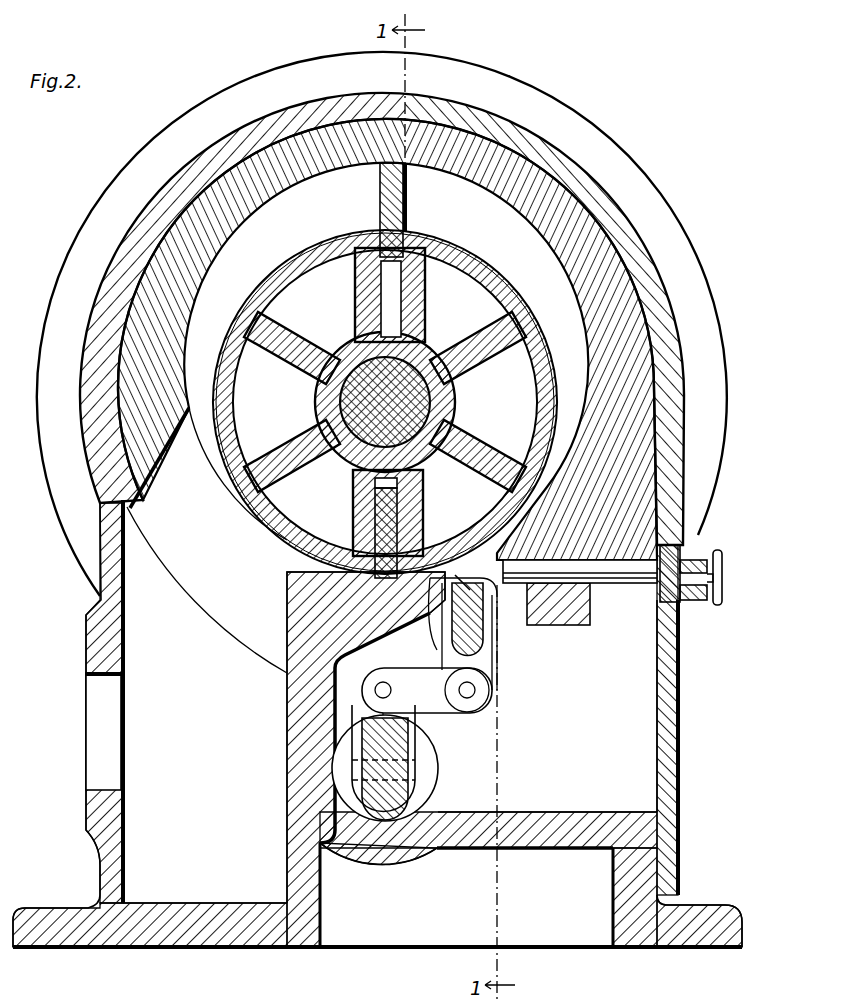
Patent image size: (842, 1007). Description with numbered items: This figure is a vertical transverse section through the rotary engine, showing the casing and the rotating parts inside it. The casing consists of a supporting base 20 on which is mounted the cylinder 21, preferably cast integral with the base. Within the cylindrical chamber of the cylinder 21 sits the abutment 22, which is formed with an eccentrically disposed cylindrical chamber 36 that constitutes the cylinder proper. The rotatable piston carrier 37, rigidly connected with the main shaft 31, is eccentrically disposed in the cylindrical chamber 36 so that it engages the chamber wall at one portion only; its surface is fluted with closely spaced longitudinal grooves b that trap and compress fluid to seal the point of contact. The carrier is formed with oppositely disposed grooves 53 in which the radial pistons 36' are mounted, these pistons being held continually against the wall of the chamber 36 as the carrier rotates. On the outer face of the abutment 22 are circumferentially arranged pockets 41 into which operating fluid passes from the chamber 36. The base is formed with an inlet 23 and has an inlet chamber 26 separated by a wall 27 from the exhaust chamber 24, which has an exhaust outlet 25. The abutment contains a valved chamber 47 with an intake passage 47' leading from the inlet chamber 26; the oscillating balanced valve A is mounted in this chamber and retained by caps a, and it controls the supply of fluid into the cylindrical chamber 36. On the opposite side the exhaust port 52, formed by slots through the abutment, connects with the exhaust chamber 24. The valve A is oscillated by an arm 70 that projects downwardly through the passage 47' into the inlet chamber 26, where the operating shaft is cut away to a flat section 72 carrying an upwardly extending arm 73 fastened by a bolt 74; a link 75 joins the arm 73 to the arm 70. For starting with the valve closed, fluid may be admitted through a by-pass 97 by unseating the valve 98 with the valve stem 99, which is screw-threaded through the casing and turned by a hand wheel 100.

The supporting base 20 is at (250, 947).
The cylinder 21 is at (123, 253).
The abutment 22 is at (584, 240).
The inlet 23 is at (665, 640).
The exhaust chamber 24 is at (205, 825).
The exhaust outlet 25 is at (95, 717).
The inlet chamber 26 is at (527, 751).
The wall 27 is at (292, 717).
The main shaft 31 is at (405, 410).
The cylindrical chamber 36 is at (387, 339).
The radial pistons 36' is at (393, 370).
The rotatable piston carrier 37 is at (468, 258).
The pockets 41 is at (473, 582).
The valved chamber 47 is at (565, 682).
The intake passage 47' is at (547, 698).
The exhaust port 52 is at (207, 540).
The grooves 53 is at (380, 297).
The arm 70 is at (480, 702).
The flat section 72 is at (392, 793).
The arm 73 is at (410, 718).
The bolt 74 is at (410, 770).
The link 75 is at (424, 668).
The by-pass 97 is at (497, 650).
The valve 98 is at (497, 630).
The valve stem 99 is at (625, 583).
The hand wheel 100 is at (723, 578).
The caps a is at (472, 515).
The flutes or grooves b is at (514, 296).
The oscillating balanced valve A is at (500, 665).